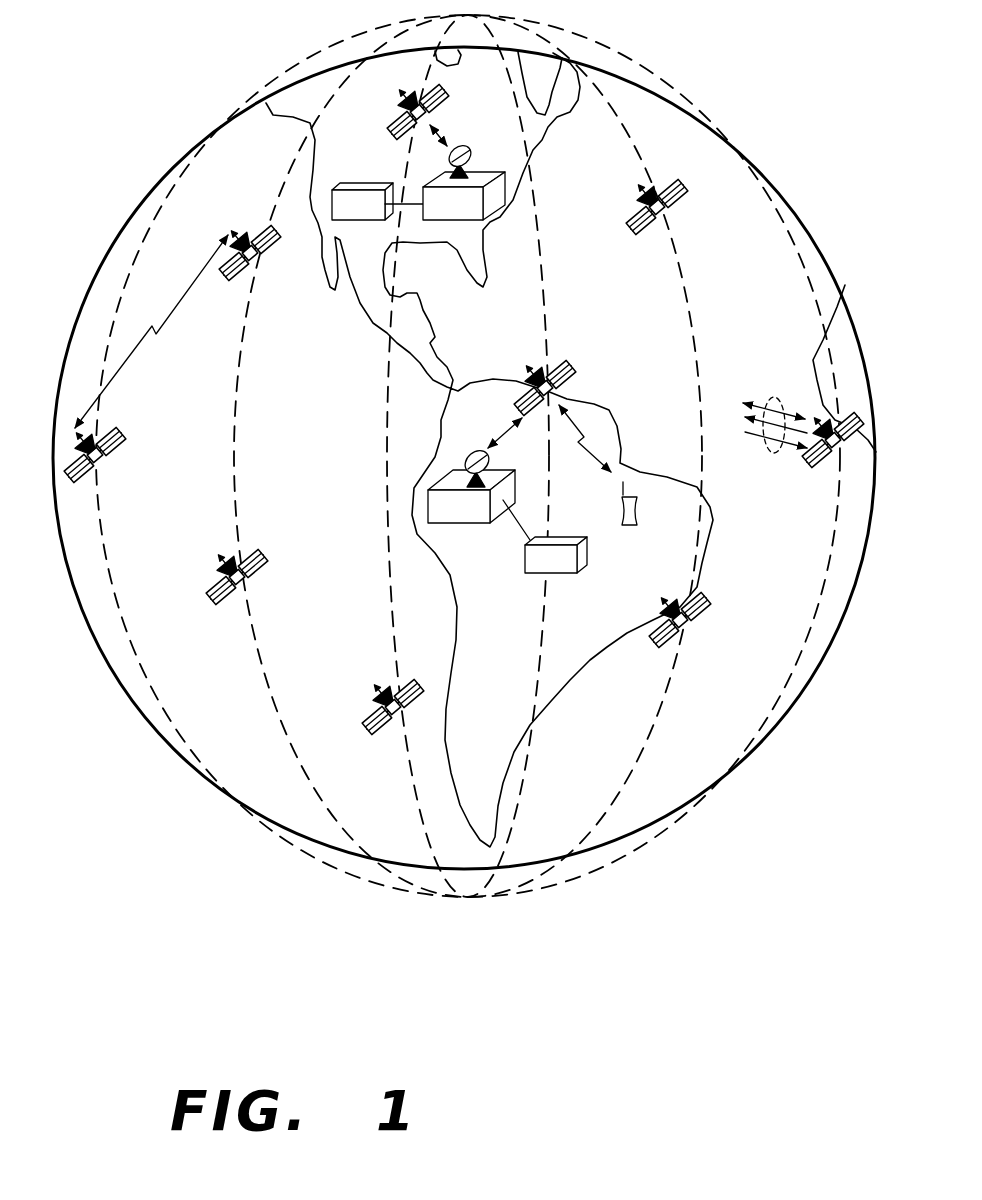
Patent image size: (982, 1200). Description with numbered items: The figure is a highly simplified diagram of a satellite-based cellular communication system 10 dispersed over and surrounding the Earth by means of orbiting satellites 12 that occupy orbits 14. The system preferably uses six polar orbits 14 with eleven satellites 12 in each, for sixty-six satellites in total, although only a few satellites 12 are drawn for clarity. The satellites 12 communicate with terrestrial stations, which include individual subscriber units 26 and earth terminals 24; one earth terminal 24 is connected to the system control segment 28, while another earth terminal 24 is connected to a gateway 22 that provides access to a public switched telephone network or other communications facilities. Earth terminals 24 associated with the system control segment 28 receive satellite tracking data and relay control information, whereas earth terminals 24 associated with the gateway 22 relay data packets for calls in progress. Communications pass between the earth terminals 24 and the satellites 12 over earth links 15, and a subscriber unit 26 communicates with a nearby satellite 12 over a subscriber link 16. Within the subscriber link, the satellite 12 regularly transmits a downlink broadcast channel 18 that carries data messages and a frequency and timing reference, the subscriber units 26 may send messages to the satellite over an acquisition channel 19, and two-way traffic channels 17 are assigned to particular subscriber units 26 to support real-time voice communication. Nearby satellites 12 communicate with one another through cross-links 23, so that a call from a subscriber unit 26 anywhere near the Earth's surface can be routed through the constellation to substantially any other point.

The satellite-based cellular communication system 10 is at (457, 990).
The satellite 12 is at (393, 147).
The orbit 14 is at (290, 172).
The earth link 15 is at (501, 430).
The subscriber link 16 is at (583, 418).
The traffic channel 17 is at (763, 402).
The broadcast channel 18 is at (748, 414).
The acquisition channel 19 is at (762, 442).
The gateway 22 is at (563, 573).
The cross-link 23 is at (162, 318).
The earth terminal 24 is at (489, 172).
The individual subscriber unit 26 is at (627, 525).
The system control segment 28 is at (345, 221).